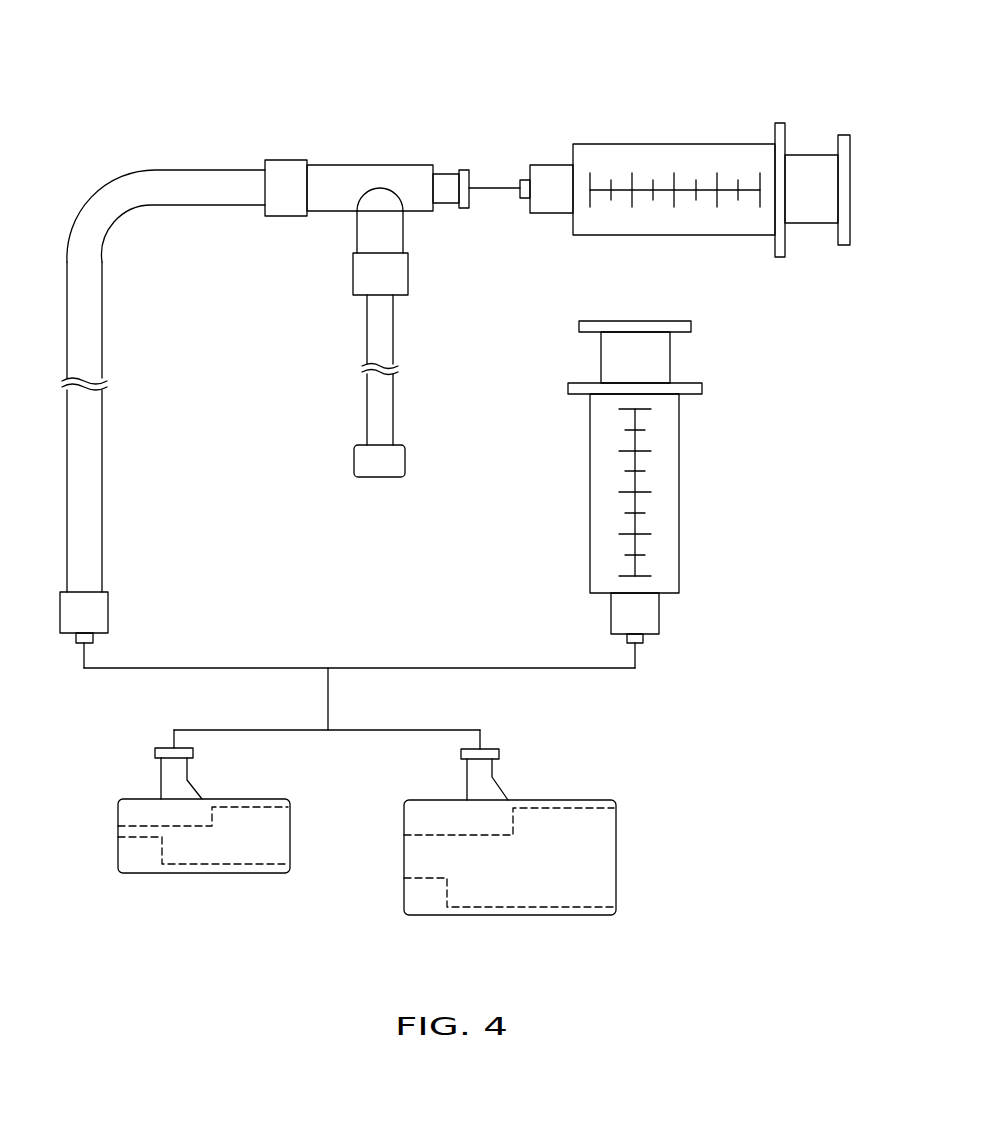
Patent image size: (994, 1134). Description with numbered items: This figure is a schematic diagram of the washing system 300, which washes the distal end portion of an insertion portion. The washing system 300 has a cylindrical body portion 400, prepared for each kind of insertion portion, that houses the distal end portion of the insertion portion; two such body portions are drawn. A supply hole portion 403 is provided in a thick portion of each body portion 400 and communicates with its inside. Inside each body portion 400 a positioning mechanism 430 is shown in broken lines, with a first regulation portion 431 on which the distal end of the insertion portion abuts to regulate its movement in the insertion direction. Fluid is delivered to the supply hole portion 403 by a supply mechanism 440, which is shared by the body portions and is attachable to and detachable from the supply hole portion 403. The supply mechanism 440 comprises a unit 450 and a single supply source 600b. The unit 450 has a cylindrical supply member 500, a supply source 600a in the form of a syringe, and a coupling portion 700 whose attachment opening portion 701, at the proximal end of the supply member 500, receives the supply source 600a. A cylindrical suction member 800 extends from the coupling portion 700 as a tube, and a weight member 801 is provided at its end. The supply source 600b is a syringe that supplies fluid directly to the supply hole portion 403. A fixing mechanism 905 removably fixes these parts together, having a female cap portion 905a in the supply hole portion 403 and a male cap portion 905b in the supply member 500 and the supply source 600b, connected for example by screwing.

The washing system 300 is at (158, 158).
The supply member 500 is at (107, 338).
The coupling portion 700 is at (375, 158).
The attachment opening portion 701 is at (463, 168).
The supply mechanism 440 is at (547, 75).
The unit 450 is at (577, 122).
The supply source 600a is at (695, 132).
The supply source 600b is at (720, 433).
The suction member 800 is at (408, 403).
The weight member 801 is at (397, 462).
The fixing mechanism 905 is at (406, 676).
The female cap portion 905a is at (156, 753).
The male cap portion 905b is at (100, 612).
The body portion 400 is at (381, 873).
The supply hole portion 403 is at (167, 784).
The positioning mechanism 430 is at (359, 889).
The first regulation portion 431 is at (142, 853).